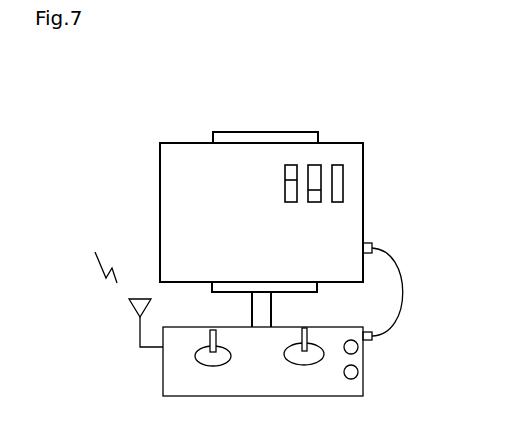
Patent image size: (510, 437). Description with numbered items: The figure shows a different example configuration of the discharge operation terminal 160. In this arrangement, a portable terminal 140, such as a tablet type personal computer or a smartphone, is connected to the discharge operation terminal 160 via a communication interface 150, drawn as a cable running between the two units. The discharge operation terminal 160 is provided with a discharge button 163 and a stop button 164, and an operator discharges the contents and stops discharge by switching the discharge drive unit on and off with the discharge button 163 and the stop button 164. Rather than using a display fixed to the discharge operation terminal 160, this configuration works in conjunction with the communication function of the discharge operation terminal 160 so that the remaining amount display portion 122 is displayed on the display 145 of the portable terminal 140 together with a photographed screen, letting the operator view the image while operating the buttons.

The portable terminal 140 is at (366, 162).
The remaining amount display portion 122 is at (349, 189).
The display 145 is at (178, 187).
The communication interface 150 is at (402, 292).
The discharge operation terminal 160 is at (163, 373).
The discharge button 163 is at (358, 347).
The stop button 164 is at (358, 373).